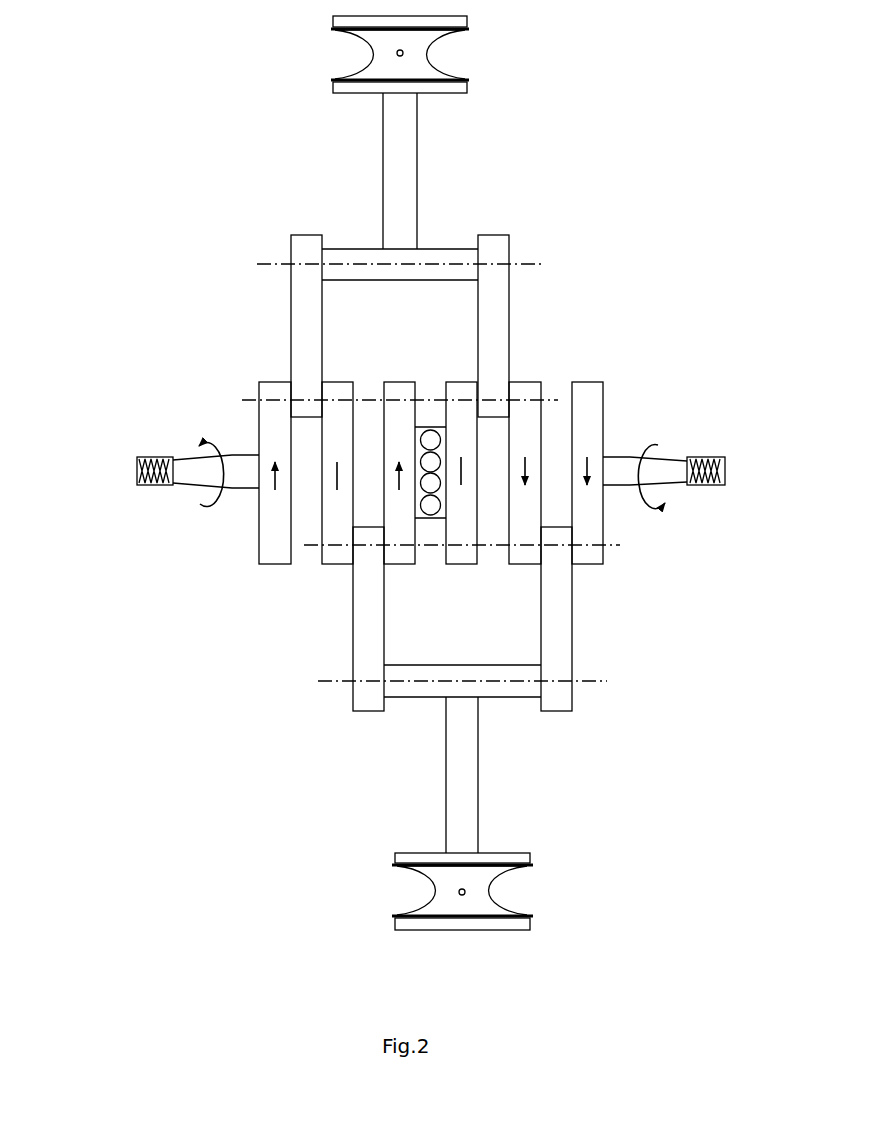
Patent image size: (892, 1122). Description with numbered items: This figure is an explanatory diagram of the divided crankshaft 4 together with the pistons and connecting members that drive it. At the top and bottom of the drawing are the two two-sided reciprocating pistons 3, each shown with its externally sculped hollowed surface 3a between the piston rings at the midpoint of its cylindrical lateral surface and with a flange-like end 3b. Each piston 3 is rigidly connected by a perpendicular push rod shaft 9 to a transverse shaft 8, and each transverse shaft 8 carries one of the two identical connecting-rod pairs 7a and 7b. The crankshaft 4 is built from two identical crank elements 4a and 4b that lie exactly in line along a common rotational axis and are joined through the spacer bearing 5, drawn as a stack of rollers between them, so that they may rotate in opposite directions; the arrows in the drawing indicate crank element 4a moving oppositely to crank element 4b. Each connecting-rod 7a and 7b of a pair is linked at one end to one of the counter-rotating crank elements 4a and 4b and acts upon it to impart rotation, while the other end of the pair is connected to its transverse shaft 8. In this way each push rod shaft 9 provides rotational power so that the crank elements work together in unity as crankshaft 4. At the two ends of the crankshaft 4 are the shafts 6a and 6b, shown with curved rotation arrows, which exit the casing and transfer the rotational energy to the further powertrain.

The two-sided reciprocating piston 3 is at (410, 72).
The externally sculped hollowed surface 3a is at (345, 60).
The pulley flange plate 3b is at (470, 82).
The divided crankshaft 4 is at (306, 598).
The crank element 4a is at (263, 382).
The crank element 4b is at (593, 382).
The spacer bearing 5 is at (435, 460).
The shaft 6a is at (193, 463).
The shaft 6b is at (672, 467).
The connecting-rod 7a is at (307, 327).
The connecting-rod 7b is at (500, 320).
The transverse shaft 8 is at (375, 254).
The push rod shaft 9 is at (405, 130).